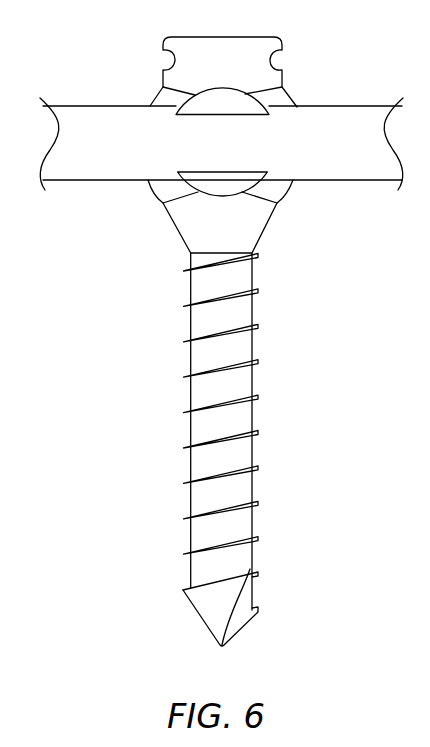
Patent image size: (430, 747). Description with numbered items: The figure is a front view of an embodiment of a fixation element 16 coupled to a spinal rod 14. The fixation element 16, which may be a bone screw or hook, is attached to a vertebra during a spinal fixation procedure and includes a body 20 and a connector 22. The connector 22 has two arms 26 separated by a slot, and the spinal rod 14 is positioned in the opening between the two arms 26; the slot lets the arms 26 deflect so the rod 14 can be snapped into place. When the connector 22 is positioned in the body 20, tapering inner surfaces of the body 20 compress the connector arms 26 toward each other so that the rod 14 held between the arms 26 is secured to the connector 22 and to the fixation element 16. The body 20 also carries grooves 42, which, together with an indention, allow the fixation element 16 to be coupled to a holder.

The rod 14 is at (341, 154).
The fixation element 16 is at (115, 431).
The body 20 is at (218, 228).
The connector 22 is at (203, 180).
The arms 26 is at (235, 105).
The grooves 42 is at (165, 60).